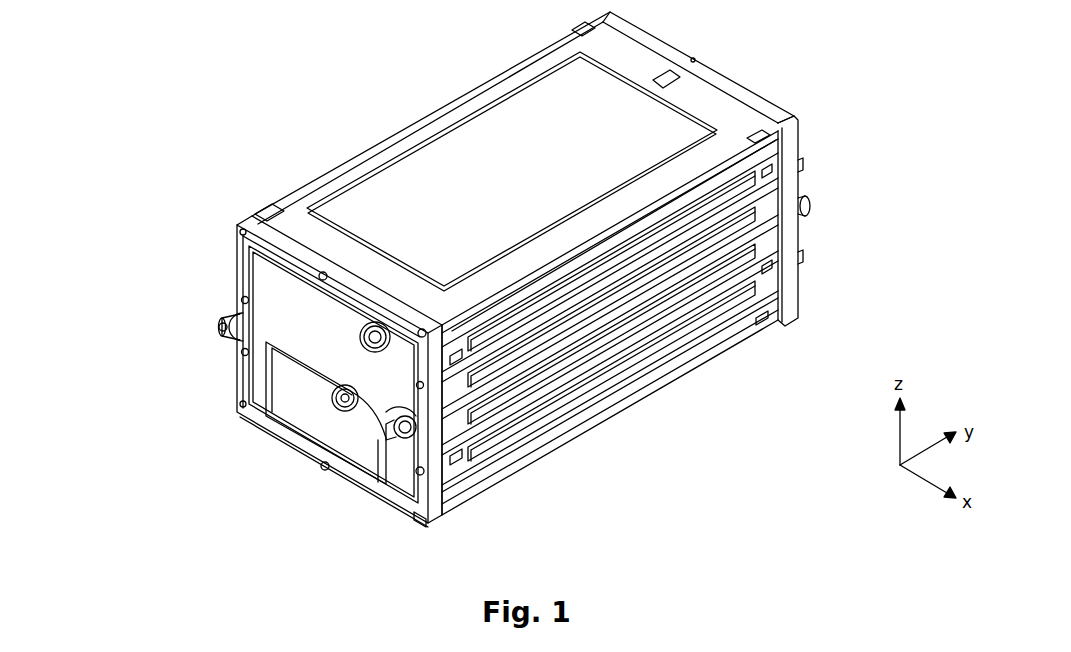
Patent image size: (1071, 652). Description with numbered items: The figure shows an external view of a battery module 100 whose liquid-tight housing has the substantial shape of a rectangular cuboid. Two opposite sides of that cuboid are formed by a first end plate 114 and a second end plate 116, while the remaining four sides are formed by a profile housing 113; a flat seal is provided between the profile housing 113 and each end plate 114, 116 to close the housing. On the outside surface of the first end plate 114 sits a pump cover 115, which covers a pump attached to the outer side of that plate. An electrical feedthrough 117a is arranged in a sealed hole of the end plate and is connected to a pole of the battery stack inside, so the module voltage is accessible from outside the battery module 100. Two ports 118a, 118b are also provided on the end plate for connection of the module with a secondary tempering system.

The battery module 100 is at (316, 60).
The profile housing 113 is at (640, 373).
The first end plate 114 is at (430, 490).
The pump cover 115 is at (275, 397).
The second end plate 116 is at (790, 290).
The electrical feedthrough 117a is at (378, 329).
The port 118a is at (230, 327).
The port 118b is at (418, 428).